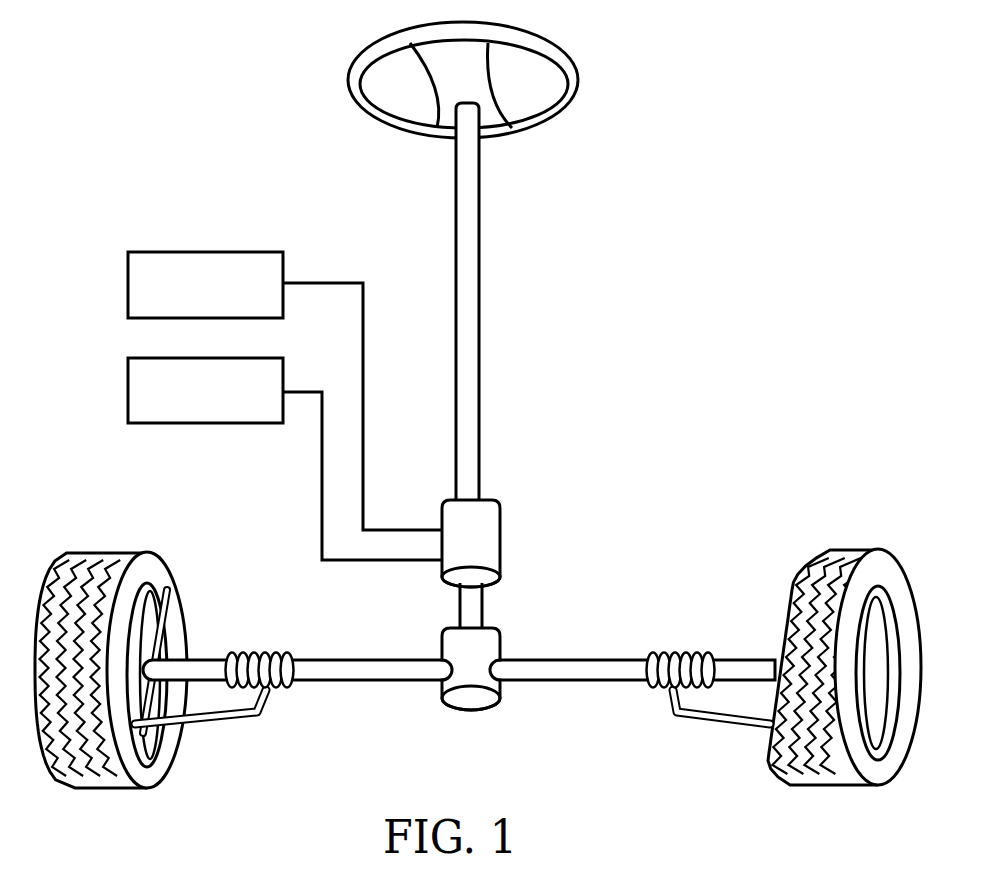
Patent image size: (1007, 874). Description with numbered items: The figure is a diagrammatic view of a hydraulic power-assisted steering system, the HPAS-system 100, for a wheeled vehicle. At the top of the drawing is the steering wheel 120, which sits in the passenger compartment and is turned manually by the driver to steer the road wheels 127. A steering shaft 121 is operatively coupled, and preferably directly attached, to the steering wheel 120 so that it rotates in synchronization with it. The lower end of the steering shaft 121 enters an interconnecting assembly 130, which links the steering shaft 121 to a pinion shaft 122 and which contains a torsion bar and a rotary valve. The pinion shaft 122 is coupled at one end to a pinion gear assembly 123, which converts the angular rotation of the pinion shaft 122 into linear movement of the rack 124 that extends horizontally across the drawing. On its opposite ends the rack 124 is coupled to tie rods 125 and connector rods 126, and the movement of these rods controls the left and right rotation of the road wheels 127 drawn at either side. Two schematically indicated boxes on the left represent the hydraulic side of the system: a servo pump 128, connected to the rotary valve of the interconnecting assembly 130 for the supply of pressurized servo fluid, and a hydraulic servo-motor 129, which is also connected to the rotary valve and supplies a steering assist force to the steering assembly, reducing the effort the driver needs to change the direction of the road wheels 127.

The HPAS-system 100 is at (745, 106).
The steering wheel 120 is at (570, 77).
The steering shaft 121 is at (472, 178).
The pinion shaft 122 is at (472, 597).
The pinion gear assembly 123 is at (488, 645).
The rack 124 is at (360, 680).
The tie rods 125 is at (262, 655).
The connector rods 126 is at (212, 714).
The road wheels 127 is at (130, 553).
The servo pump 128 is at (226, 292).
The hydraulic servo-motor 129 is at (226, 397).
The interconnecting assembly 130 is at (478, 532).